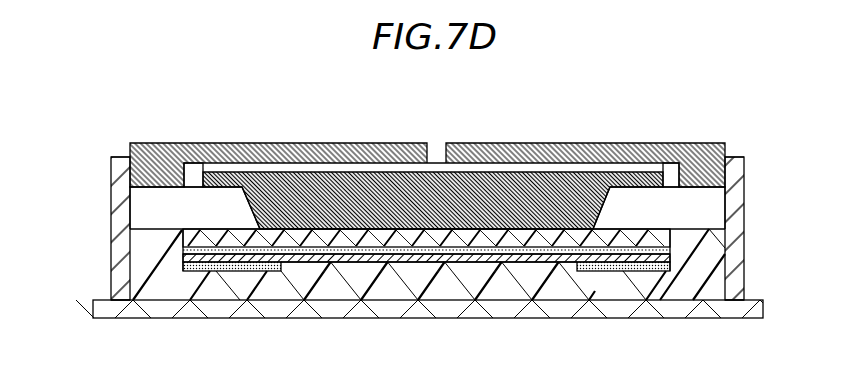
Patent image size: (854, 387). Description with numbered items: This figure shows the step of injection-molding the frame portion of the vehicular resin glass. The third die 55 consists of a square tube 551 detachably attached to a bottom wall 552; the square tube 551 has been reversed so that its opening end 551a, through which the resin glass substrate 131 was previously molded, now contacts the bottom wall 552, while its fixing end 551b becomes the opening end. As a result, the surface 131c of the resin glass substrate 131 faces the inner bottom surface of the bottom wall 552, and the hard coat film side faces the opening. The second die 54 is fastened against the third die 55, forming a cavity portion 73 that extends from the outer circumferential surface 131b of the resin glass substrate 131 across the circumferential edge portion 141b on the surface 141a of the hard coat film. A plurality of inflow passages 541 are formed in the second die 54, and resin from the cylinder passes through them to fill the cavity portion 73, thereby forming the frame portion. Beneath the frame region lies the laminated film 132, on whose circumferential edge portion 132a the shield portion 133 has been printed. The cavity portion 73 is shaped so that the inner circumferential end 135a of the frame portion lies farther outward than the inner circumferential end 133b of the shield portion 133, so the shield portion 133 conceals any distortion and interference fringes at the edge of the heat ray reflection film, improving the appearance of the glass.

The third die 55 is at (424, 231).
The square tube 551 is at (118, 221).
The opening end 551a is at (124, 306).
The fixing end 551b is at (113, 160).
The bottom wall 552 is at (493, 308).
The second die 54 is at (427, 143).
The inflow passages 541 is at (192, 167).
The surface of the hard coat film 141a is at (478, 227).
The circumferential edge portion of the hard coat film 141b is at (207, 227).
The inner circumferential end of the frame portion 135a is at (263, 227).
The cavity portion 73 is at (177, 218).
The resin glass substrate 131 is at (427, 226).
The outer circumferential surface of the resin glass substrate 131b is at (178, 266).
The surface of the resin glass substrate 131c is at (372, 290).
The laminated film 132 is at (428, 262).
The circumferential edge portion of the laminated film 132a is at (218, 269).
The shield portion 133 is at (243, 262).
The inner circumferential end of the shield portion 133b is at (281, 268).